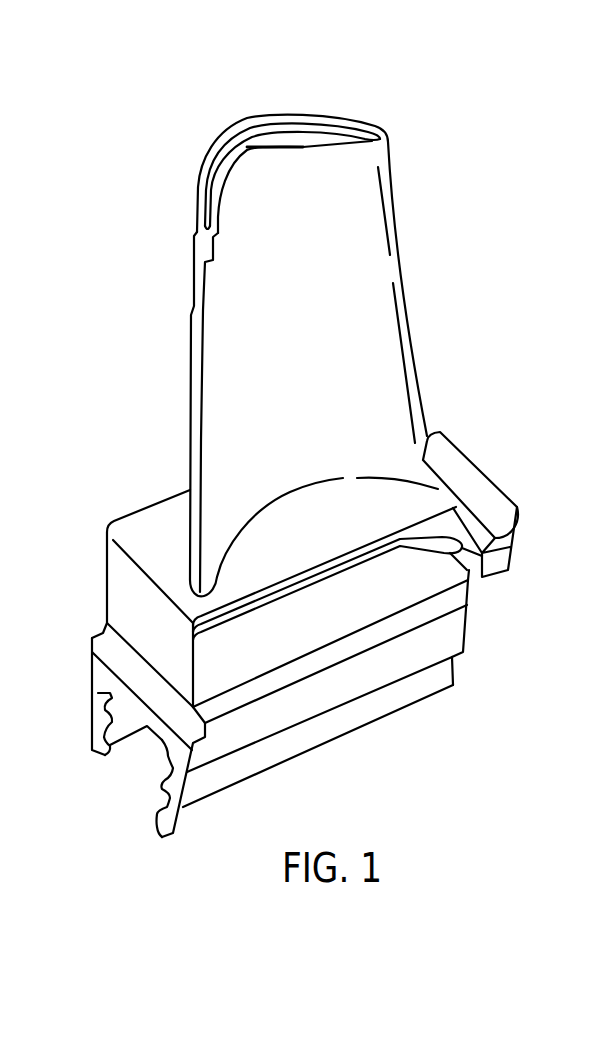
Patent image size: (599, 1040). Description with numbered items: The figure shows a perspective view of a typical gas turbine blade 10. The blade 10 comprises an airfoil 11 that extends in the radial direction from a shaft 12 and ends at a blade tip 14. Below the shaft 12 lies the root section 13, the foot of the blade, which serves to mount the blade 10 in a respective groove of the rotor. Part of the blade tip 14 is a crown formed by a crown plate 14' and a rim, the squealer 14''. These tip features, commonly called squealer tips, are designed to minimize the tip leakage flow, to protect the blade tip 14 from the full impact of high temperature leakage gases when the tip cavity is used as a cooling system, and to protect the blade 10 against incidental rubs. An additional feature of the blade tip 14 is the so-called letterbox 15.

The blade 10 is at (313, 90).
The airfoil 11 is at (228, 383).
The shaft 12 is at (210, 663).
The root section 13 is at (155, 785).
The blade tip 14 is at (269, 131).
The crown plate 14' is at (295, 131).
The squealer 14'' is at (292, 130).
The letterbox 15 is at (292, 150).